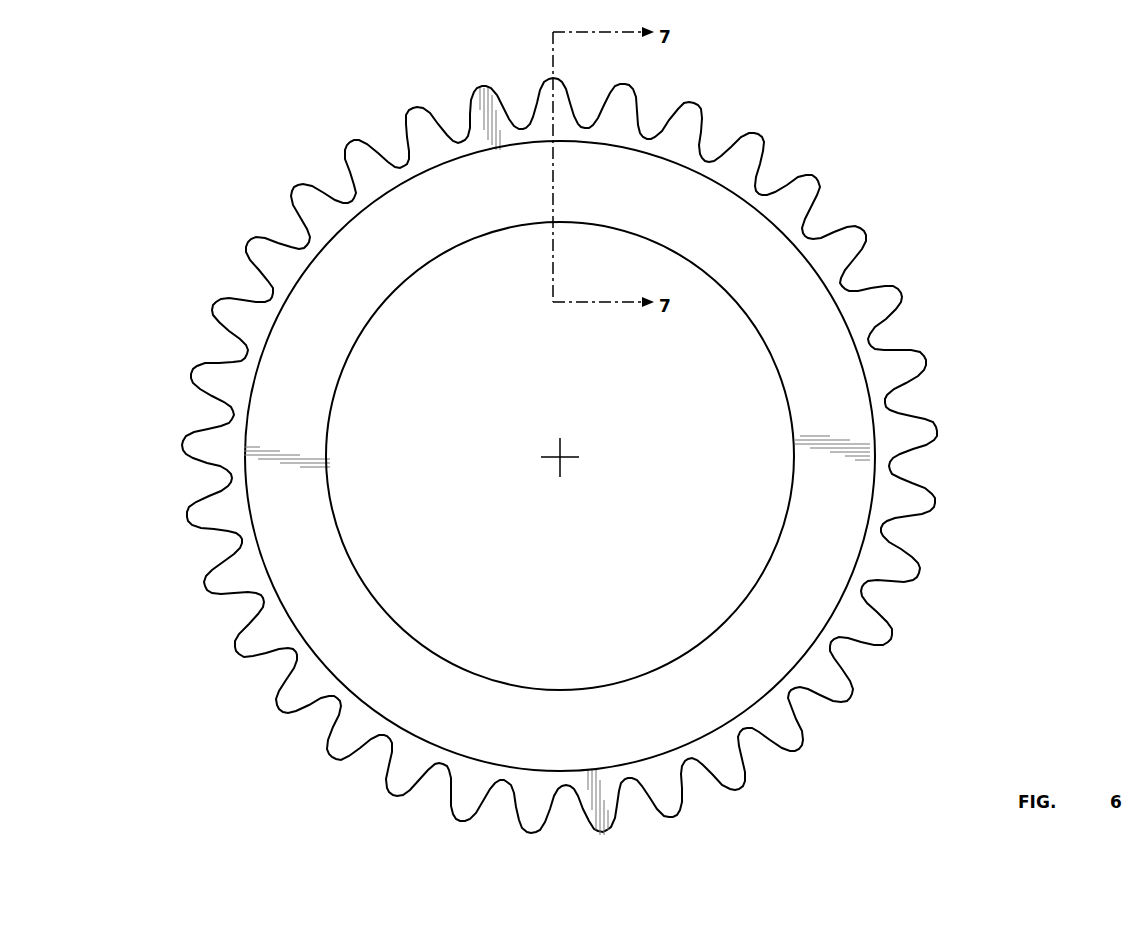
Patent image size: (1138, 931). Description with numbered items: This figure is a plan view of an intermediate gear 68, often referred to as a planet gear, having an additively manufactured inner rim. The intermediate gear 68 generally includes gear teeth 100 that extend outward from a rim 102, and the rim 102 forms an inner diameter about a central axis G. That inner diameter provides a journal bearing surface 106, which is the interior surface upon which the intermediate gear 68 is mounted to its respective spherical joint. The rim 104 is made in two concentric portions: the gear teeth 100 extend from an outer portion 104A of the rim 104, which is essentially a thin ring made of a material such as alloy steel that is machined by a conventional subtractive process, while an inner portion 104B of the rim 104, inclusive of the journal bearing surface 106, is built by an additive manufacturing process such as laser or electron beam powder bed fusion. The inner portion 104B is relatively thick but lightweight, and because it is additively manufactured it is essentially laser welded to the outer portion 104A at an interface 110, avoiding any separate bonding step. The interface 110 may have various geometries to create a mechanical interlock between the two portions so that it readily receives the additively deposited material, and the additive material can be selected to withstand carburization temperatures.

The intermediate gear 68 is at (856, 108).
The gear teeth 100 is at (882, 235).
The rim 102 is at (860, 553).
The rim 104 is at (875, 387).
The outer portion 104A is at (807, 657).
The inner portion 104B is at (717, 650).
The journal bearing surface 106 is at (415, 642).
The interface 110 is at (715, 733).
The axis G is at (560, 457).